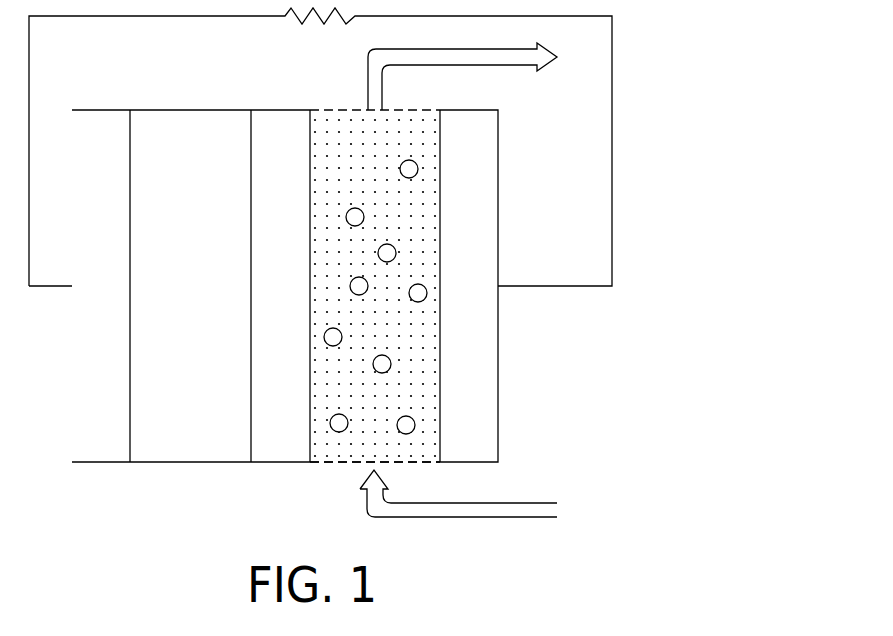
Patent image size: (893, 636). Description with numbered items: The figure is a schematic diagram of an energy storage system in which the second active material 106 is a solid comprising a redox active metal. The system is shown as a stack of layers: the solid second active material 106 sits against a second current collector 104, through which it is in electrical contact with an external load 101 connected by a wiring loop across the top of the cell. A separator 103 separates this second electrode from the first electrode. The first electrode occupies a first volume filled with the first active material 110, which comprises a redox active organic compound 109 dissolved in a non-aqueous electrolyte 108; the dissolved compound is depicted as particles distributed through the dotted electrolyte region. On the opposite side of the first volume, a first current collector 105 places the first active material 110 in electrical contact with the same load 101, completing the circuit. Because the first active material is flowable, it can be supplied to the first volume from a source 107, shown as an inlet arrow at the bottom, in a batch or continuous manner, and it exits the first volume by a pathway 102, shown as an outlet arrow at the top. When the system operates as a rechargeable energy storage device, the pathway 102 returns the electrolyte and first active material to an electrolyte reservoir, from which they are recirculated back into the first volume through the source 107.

The load 101 is at (318, 20).
The pathway 102 is at (505, 66).
The separator 103 is at (302, 295).
The second current collector 104 is at (122, 295).
The first current collector 105 is at (490, 295).
The second active material 106 is at (212, 295).
The source 107 is at (493, 502).
The non-aqueous electrolyte 108 is at (368, 170).
The redox active organic compound 109 is at (394, 246).
The first active material 110 is at (335, 465).